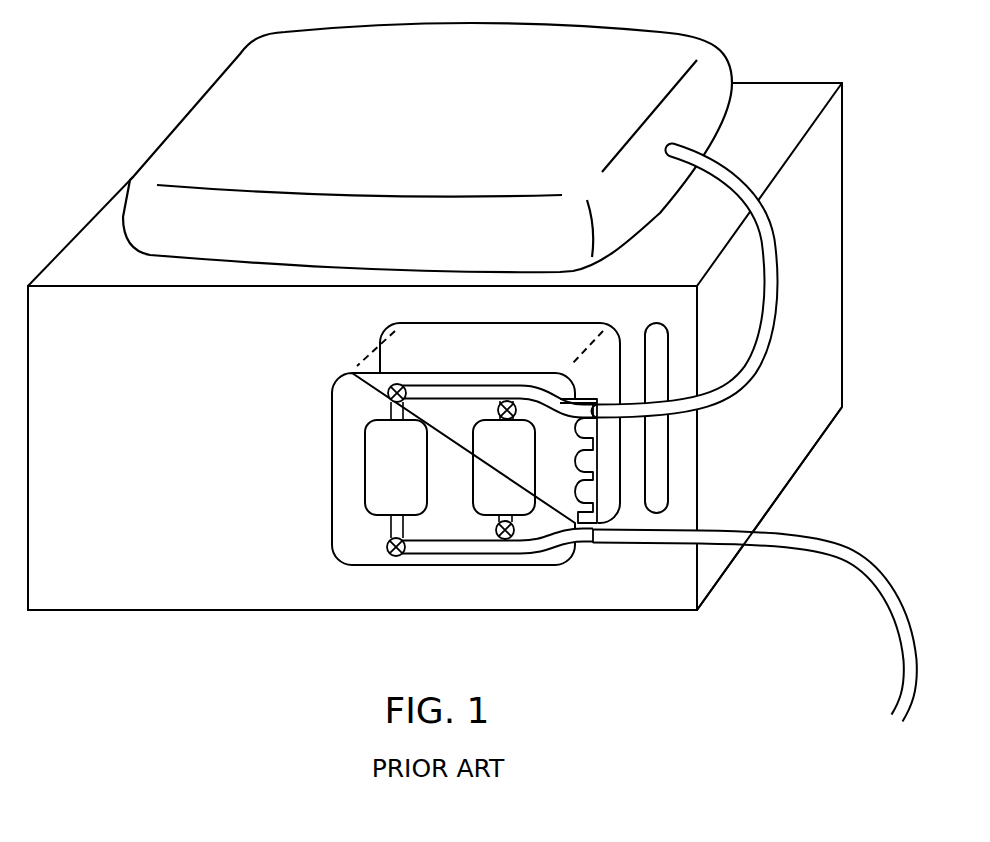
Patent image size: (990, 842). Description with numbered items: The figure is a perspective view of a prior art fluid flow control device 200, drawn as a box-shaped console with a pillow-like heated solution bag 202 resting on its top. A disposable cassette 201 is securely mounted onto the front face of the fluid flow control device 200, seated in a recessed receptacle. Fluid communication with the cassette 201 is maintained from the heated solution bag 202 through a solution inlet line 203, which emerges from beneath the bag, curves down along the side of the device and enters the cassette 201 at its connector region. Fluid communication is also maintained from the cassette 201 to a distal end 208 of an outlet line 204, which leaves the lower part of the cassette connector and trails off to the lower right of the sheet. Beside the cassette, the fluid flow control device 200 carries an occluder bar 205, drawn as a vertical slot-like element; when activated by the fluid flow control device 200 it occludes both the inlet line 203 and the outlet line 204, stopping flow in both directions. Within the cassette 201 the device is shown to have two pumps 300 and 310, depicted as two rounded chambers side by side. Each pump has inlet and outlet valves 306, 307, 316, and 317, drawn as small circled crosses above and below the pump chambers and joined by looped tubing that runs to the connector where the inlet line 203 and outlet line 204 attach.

The fluid flow control device 200 is at (87, 611).
The disposable cassette 201 is at (335, 552).
The heated solution bag 202 is at (413, 123).
The solution inlet line 203 is at (776, 332).
The outlet line 204 is at (642, 543).
The occluder bar 205 is at (668, 473).
The distal end of outlet line 208 is at (907, 711).
The pump 300 is at (376, 487).
The pump 310 is at (488, 487).
The valve 306 is at (505, 541).
The valve 307 is at (507, 393).
The valve 316 is at (393, 557).
The valve 317 is at (401, 385).